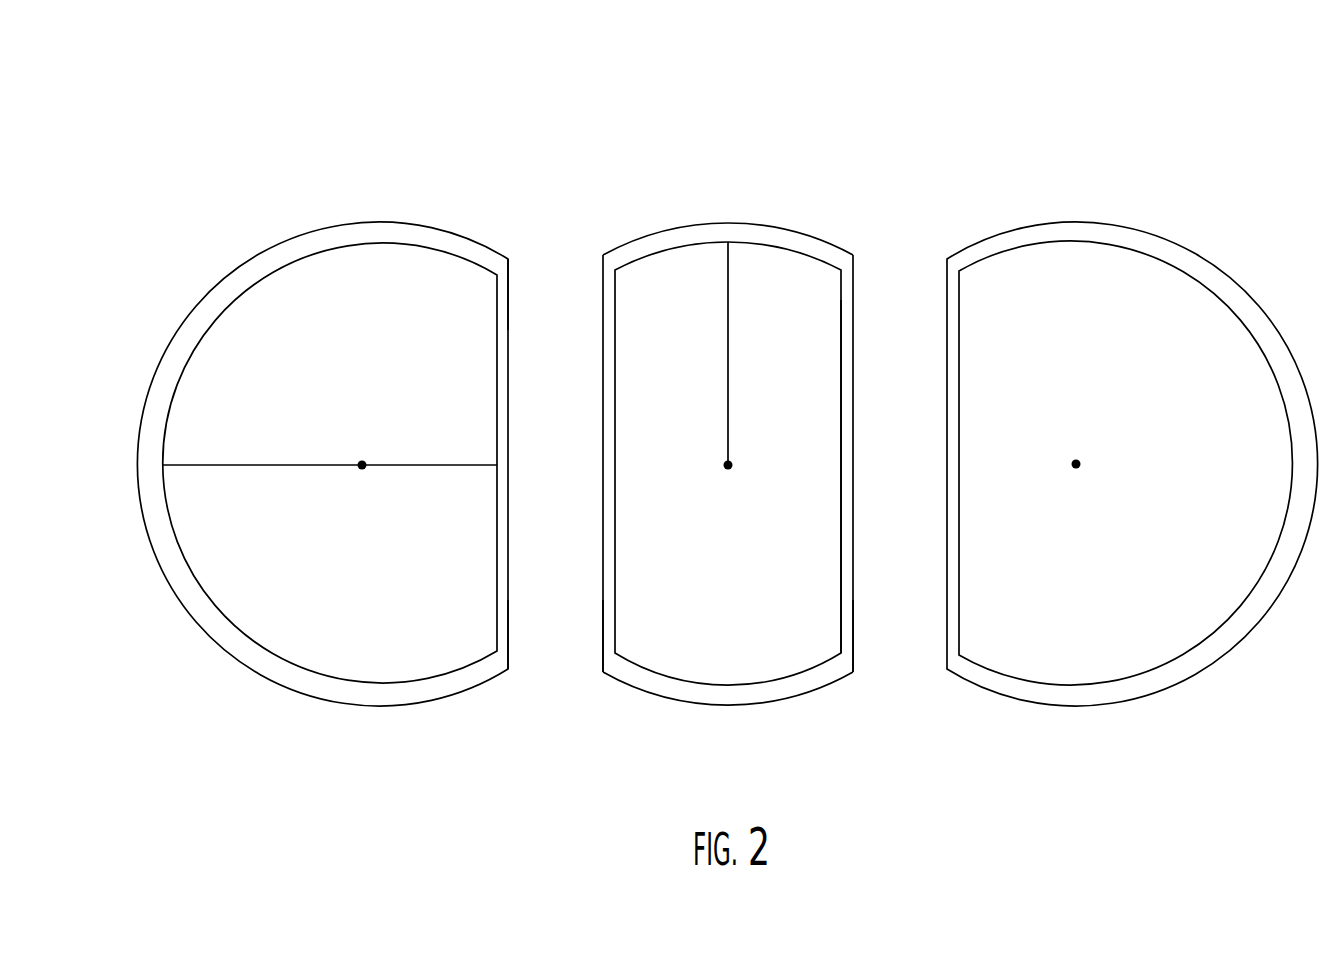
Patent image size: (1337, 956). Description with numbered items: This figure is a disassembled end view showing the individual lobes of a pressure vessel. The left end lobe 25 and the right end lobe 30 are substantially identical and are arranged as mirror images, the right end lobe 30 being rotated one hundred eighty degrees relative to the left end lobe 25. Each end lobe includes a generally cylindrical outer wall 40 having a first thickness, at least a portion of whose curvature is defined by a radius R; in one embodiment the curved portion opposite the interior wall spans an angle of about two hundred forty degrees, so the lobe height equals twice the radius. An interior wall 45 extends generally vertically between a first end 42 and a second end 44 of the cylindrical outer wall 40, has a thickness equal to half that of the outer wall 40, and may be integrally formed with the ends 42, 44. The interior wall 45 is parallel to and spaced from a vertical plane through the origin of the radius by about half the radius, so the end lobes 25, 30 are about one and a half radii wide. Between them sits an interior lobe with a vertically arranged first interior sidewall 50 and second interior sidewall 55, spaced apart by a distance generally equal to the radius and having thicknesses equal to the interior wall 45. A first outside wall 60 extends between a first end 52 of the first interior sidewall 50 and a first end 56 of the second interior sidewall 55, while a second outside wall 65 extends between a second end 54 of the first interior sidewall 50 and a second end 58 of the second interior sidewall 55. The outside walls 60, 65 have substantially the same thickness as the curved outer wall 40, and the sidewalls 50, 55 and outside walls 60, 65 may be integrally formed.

The left end lobe 25 is at (227, 138).
The right end lobe 30 is at (728, 113).
The cylindrical outer wall 40 is at (313, 695).
The first end 42 is at (510, 273).
The second end 44 is at (508, 652).
The interior wall 45 is at (495, 553).
The first interior sidewall 50 is at (617, 408).
The first end of first interior sidewall 52 is at (610, 268).
The second end of first interior sidewall 54 is at (603, 672).
The second interior sidewall 55 is at (840, 483).
The first end of second interior sidewall 56 is at (855, 272).
The second end of second interior sidewall 58 is at (856, 648).
The first outside wall 60 is at (768, 227).
The second outside wall 65 is at (722, 705).